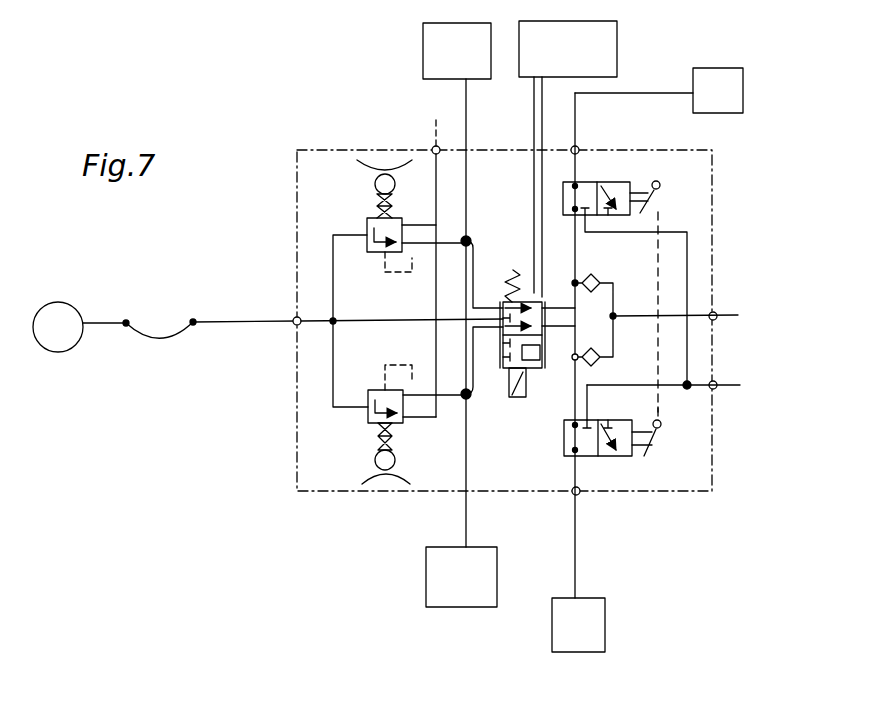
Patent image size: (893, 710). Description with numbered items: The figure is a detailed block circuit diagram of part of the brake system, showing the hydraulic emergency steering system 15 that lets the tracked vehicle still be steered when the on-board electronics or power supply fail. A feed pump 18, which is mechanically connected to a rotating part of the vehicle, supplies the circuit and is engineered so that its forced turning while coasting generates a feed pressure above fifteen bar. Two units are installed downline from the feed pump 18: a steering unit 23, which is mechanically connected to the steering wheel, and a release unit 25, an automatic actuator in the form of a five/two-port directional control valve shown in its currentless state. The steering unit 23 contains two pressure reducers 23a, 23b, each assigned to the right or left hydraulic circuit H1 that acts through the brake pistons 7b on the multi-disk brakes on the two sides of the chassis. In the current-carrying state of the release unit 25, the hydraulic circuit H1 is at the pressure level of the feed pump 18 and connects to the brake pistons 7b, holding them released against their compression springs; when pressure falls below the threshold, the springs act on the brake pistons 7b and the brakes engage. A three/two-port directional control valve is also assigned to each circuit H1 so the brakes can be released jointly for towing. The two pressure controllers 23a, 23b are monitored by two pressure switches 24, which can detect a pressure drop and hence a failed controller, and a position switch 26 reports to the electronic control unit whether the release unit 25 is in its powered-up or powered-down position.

The hydraulic emergency steering system 15 is at (296, 238).
The feed pump 18 is at (165, 327).
The steering unit 23 is at (327, 416).
The pressure reducer 23a is at (351, 210).
The pressure reducer 23b is at (362, 450).
The pressure switch 24 is at (423, 50).
The release unit 25 is at (509, 258).
The position switch 26 is at (617, 55).
The brake piston 7b is at (647, 360).
The hydraulic circuit H1 is at (575, 122).